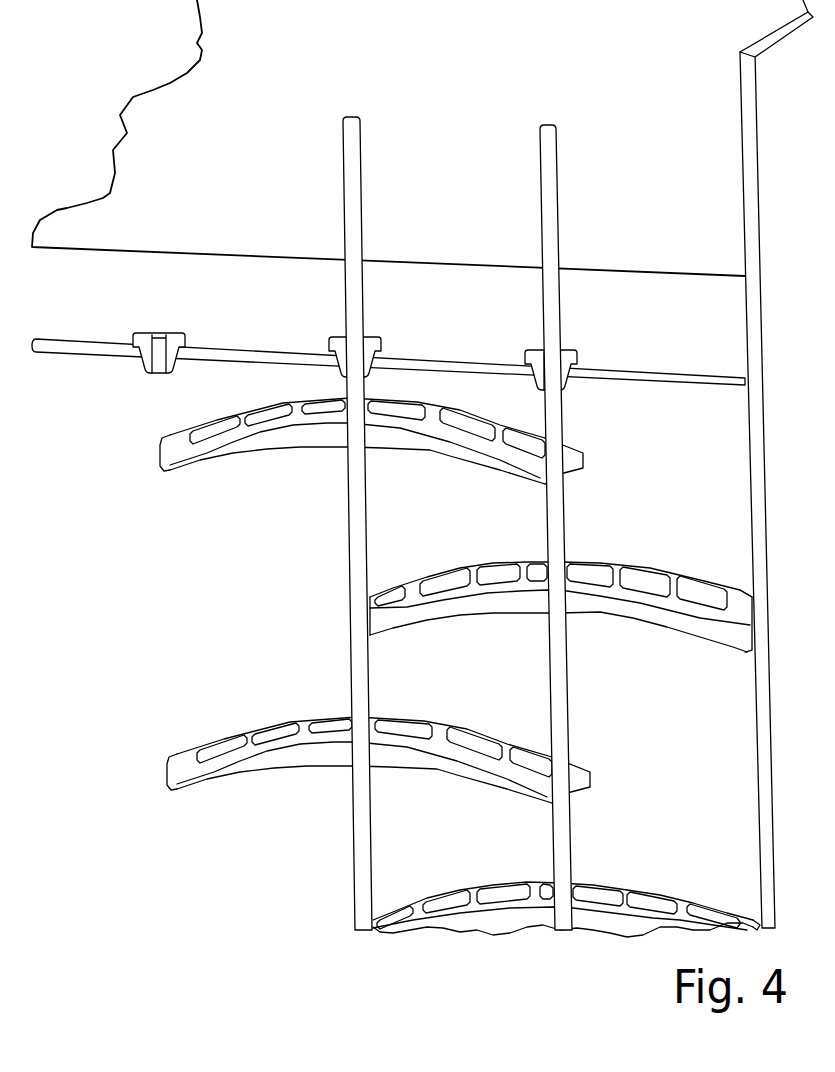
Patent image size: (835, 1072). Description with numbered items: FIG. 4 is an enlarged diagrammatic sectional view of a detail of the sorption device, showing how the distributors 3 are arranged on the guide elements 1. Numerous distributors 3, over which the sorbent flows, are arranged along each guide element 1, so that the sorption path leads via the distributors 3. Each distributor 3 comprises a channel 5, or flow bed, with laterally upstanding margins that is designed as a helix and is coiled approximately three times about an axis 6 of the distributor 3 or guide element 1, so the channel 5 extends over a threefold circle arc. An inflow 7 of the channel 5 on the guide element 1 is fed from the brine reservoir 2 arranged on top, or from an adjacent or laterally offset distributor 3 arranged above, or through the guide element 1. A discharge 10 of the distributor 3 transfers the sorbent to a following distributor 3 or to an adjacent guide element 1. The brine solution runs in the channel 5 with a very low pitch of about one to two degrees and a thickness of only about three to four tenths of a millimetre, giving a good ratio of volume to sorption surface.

The guide element 1 is at (355, 178).
The brine reservoir 2 is at (230, 135).
The distributor 3 is at (300, 446).
The channel 5 is at (219, 425).
The axis 6 is at (577, 507).
The inflow 7 is at (334, 391).
The discharge 10 is at (572, 435).